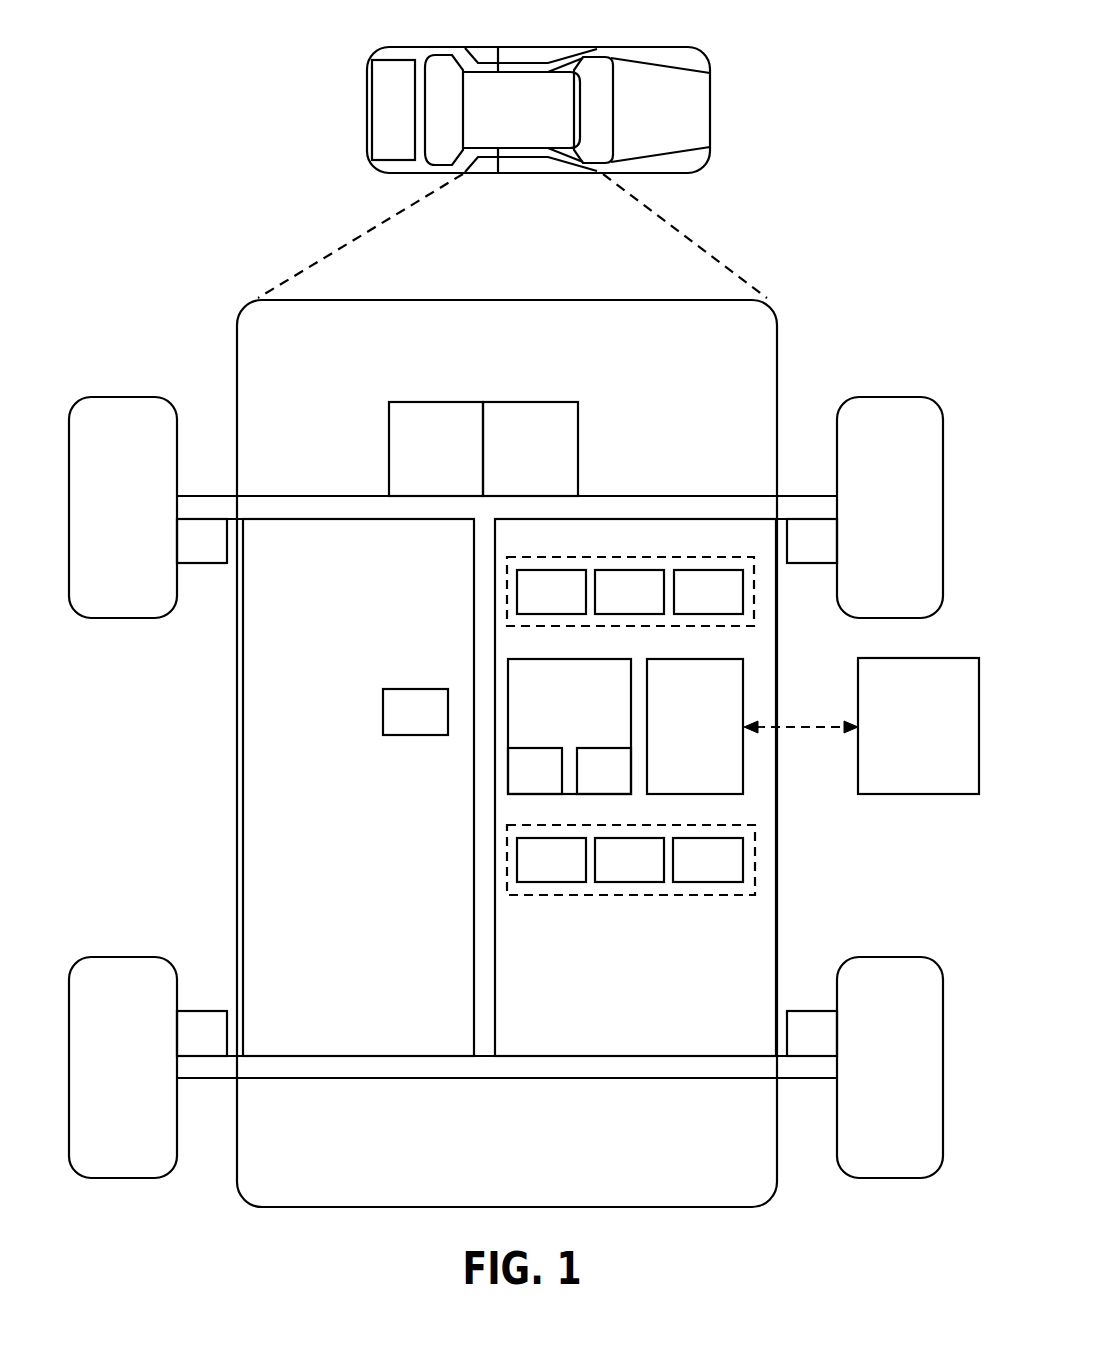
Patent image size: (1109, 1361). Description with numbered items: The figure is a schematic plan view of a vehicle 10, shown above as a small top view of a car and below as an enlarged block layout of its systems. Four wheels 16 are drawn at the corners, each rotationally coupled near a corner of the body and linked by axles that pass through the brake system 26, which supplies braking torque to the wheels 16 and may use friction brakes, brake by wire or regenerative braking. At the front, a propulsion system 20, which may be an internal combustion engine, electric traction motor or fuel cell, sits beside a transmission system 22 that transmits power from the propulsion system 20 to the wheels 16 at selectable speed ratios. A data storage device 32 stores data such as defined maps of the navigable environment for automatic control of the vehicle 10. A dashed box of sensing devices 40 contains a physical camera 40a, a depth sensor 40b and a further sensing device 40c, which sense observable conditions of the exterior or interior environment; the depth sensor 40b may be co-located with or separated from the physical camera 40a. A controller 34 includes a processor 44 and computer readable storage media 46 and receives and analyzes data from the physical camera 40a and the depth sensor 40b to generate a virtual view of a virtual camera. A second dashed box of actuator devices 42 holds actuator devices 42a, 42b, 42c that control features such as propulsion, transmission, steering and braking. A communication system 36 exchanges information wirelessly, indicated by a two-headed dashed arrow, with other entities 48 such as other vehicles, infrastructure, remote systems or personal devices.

The vehicle 10 is at (758, 88).
The front wheels 16 is at (904, 1080).
The propulsion system 20 is at (422, 461).
The transmission system 22 is at (516, 461).
The brake system 26 is at (826, 1046).
The data storage device 32 is at (402, 725).
The controller 34 is at (556, 733).
The communication system 36 is at (682, 740).
The sensing devices 40 is at (630, 591).
The physical camera 40a is at (532, 605).
The depth sensor 40b is at (609, 605).
The sensing device 40c is at (688, 605).
The actuator devices 42 is at (631, 860).
The actuator device 42a is at (532, 873).
The actuator device 42b is at (609, 873).
The actuator device 42c is at (688, 873).
The processor 44 is at (521, 784).
The computer readable storage device or media 46 is at (590, 784).
The other entities 48 is at (905, 740).